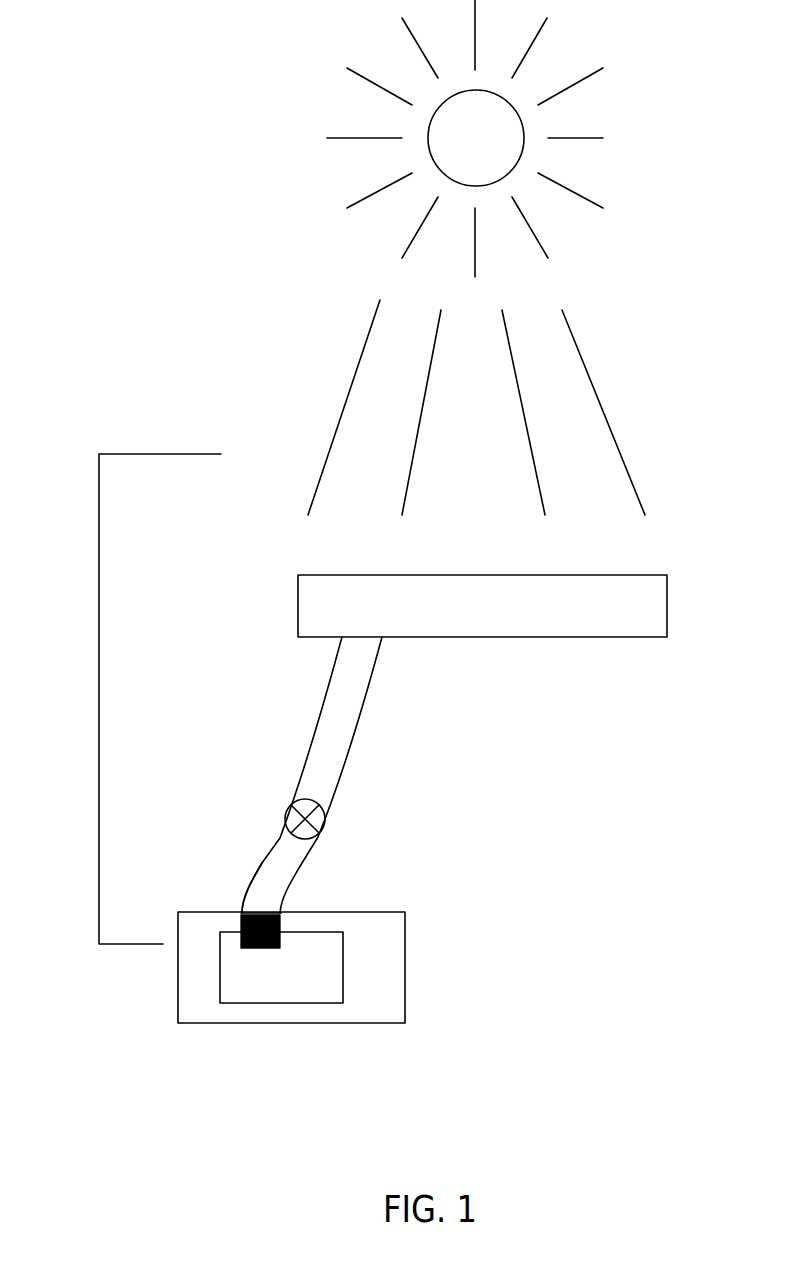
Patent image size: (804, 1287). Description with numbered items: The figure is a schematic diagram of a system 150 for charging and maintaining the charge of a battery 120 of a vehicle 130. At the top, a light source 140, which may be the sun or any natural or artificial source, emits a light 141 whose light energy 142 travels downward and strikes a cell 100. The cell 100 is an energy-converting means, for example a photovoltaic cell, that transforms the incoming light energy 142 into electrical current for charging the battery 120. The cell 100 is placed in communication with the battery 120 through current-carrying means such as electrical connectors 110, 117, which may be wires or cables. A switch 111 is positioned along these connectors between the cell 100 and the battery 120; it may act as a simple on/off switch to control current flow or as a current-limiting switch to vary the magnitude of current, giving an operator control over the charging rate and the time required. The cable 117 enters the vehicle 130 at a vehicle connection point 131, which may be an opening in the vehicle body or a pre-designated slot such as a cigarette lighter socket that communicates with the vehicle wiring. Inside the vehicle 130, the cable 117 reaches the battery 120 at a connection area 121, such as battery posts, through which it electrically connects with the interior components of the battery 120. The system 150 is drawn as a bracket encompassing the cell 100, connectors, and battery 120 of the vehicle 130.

The cell 100 is at (667, 612).
The electrical connector 110 is at (352, 737).
The switch 111 is at (317, 833).
The cable 117 is at (267, 861).
The battery 120 is at (345, 960).
The connection area 121 is at (253, 948).
The vehicle 130 is at (405, 980).
The vehicle connection point 131 is at (240, 912).
The light source 140 is at (428, 126).
The light 141 is at (603, 138).
The light energy 142 is at (592, 390).
The system 150 is at (99, 655).